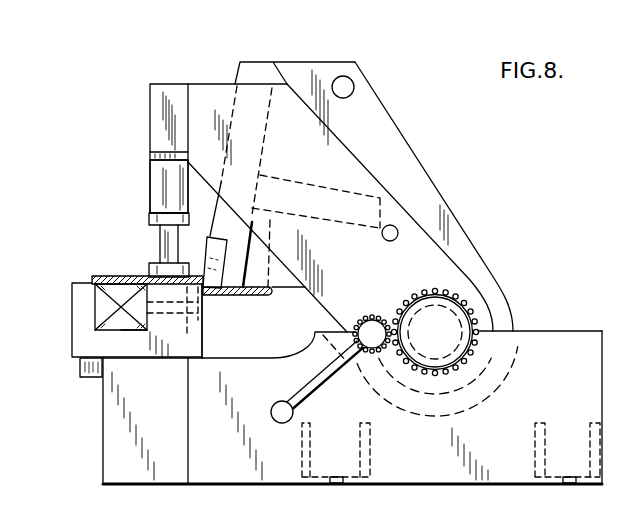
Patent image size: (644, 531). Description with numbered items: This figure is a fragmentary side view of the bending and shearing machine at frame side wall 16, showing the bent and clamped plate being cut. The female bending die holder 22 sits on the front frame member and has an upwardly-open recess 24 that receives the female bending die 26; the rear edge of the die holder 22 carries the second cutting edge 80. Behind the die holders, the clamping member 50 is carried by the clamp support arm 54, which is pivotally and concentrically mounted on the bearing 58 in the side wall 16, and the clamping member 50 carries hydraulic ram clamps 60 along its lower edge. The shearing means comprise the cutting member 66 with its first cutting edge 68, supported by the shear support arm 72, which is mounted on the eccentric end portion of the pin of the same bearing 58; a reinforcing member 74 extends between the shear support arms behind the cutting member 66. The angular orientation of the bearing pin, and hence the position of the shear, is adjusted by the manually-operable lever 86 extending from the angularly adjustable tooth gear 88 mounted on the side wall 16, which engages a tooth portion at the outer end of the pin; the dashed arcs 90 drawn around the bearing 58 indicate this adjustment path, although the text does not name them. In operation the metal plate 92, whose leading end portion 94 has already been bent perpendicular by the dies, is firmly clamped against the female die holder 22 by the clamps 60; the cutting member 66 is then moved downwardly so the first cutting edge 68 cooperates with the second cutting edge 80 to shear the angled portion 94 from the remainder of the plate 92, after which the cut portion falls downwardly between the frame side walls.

The frame side wall 16 is at (417, 470).
The female bending die holder 22 is at (82, 343).
The upwardly-open recess 24 is at (97, 310).
The female bending die 26 is at (127, 330).
The clamping member 50 is at (156, 120).
The clamp support arm 54 is at (209, 88).
The bearing 58 is at (453, 338).
The hydraulic ram clamps 60 is at (155, 196).
The cutting member 66 is at (262, 66).
The first cutting edge 68 is at (270, 294).
The shear support arm 72 is at (392, 145).
The reinforcing member 74 is at (322, 192).
The second cutting edge 80 is at (200, 303).
The manually-operable lever 86 is at (300, 392).
The angularly adjustable tooth gear 88 is at (370, 317).
The arcuate path 90 is at (470, 363).
The metal plate 92 is at (128, 276).
The leading end portion 94 is at (268, 295).